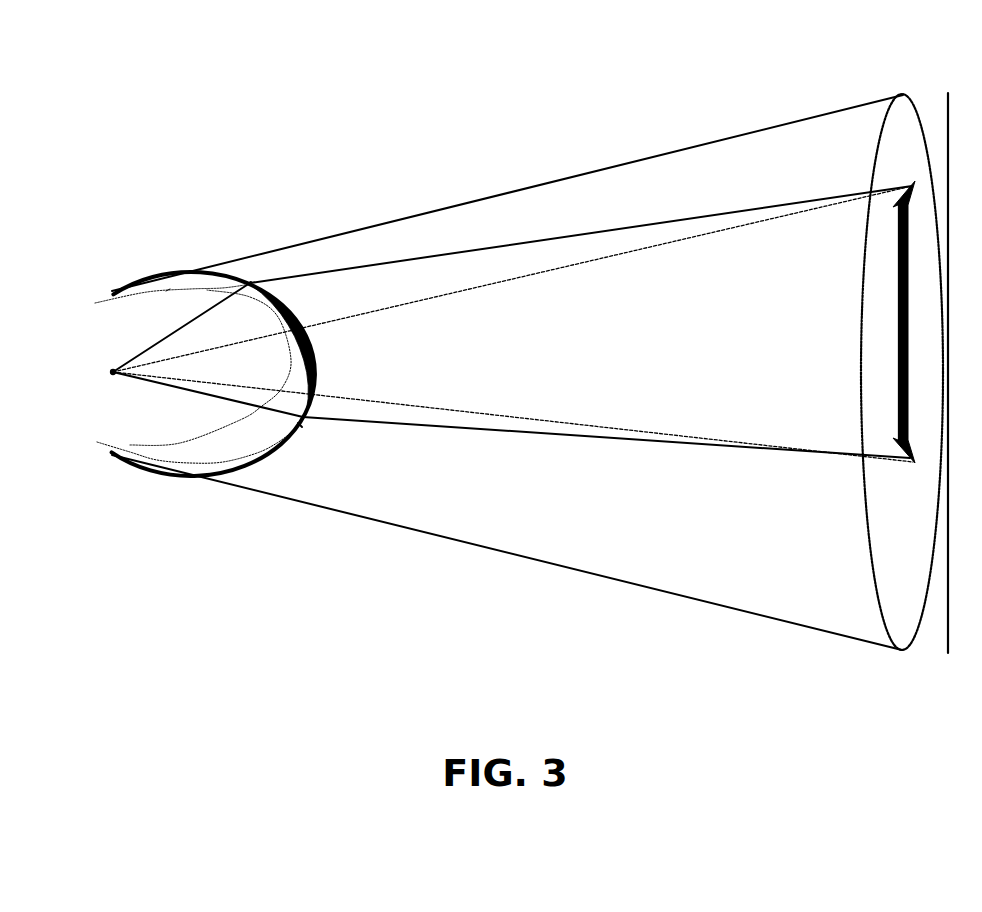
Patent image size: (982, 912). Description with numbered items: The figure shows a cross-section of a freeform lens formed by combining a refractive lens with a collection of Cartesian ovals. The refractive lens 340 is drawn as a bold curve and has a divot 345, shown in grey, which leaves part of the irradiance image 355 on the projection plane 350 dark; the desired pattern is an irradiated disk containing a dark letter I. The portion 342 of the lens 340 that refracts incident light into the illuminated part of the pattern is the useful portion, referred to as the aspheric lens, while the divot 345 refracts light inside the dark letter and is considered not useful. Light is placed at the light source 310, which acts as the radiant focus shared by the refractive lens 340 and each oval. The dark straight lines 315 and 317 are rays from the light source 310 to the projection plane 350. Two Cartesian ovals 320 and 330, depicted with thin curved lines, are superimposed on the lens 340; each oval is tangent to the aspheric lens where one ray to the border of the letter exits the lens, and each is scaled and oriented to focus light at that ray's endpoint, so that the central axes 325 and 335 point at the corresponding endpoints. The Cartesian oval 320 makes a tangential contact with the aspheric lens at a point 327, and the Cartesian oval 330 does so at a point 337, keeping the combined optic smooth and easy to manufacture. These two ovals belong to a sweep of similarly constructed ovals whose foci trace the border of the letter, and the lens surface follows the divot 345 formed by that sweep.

The light source 310 is at (113, 370).
The ray 315 is at (492, 197).
The ray 317 is at (560, 237).
The Cartesian oval 320 is at (183, 293).
The central axis of Cartesian oval 325 is at (423, 300).
The tangential contact point 327 is at (247, 287).
The Cartesian oval 330 is at (200, 463).
The central axis of Cartesian oval 335 is at (545, 417).
The tangential contact point 337 is at (300, 423).
The refractive lens 340 is at (220, 297).
The useful portion of the lens 342 is at (168, 290).
The divot 345 is at (298, 317).
The projection plane 350 is at (946, 118).
The irradiance image 355 is at (893, 135).